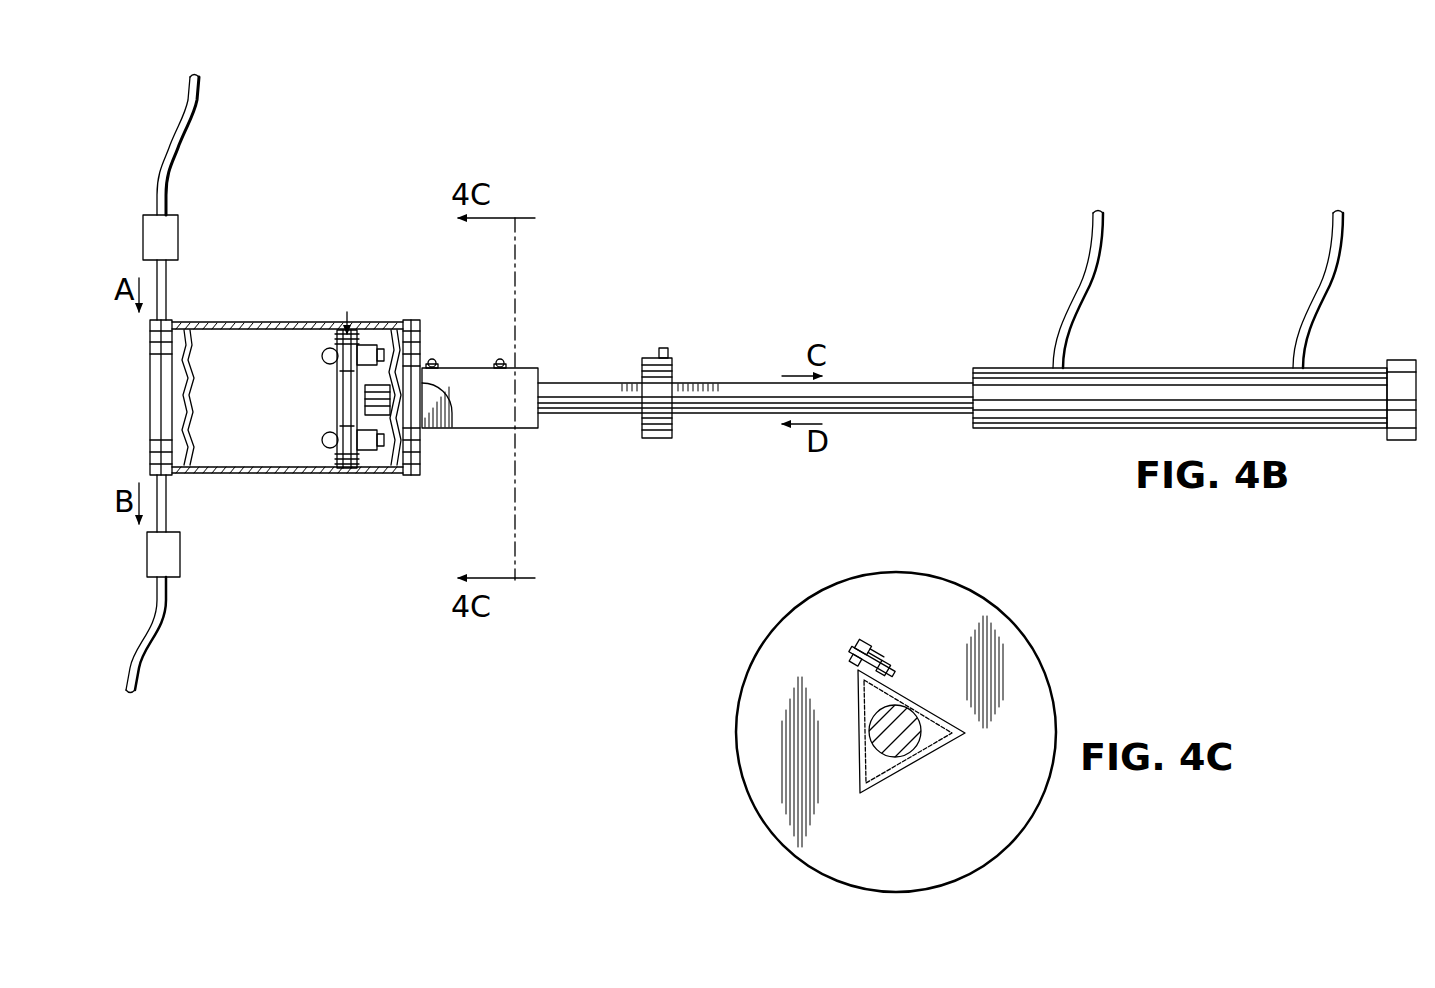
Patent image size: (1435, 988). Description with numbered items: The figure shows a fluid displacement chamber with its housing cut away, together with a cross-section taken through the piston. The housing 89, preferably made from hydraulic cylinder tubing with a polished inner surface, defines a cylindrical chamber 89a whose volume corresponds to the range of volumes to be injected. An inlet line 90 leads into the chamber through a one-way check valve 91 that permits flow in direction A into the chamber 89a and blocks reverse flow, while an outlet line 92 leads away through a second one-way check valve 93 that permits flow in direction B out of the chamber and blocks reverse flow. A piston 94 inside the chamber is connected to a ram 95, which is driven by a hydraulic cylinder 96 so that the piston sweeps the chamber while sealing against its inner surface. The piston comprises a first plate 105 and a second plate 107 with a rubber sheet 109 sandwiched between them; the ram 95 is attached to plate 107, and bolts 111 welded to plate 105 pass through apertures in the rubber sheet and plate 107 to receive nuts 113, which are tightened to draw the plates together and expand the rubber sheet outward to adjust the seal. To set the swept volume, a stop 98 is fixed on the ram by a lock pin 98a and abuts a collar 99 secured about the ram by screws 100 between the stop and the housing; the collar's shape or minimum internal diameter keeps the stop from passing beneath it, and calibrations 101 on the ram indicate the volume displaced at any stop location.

In FIG. 4B, the housing 89 is at (235, 370).
In FIG. 4C, the housing 89 is at (784, 640).
In FIG. 4B, the cylindrical chamber 89a is at (258, 370).
In FIG. 4B, the inlet line 90 is at (166, 292).
In FIG. 4B, the one-way check valve 91 is at (178, 246).
In FIG. 4B, the outlet line 92 is at (166, 508).
In FIG. 4B, the second one-way check valve 93 is at (170, 560).
In FIG. 4B, the piston 94 is at (350, 312).
In FIG. 4B, the ram 95 is at (582, 400).
In FIG. 4C, the ram 95 is at (905, 718).
In FIG. 4B, the hydraulic cylinder 96 is at (998, 378).
In FIG. 4B, the stop 98 is at (648, 358).
In FIG. 4B, the lock pin 98a is at (668, 350).
In FIG. 4B, the collar 99 is at (532, 370).
In FIG. 4C, the collar 99 is at (928, 755).
In FIG. 4B, the screws 100 is at (497, 358).
In FIG. 4C, the screws 100 is at (878, 650).
In FIG. 4B, the calibrations 101 is at (720, 383).
In FIG. 4B, the first plate 105 is at (333, 448).
In FIG. 4B, the second plate 107 is at (372, 452).
In FIG. 4B, the rubber sheet 109 is at (347, 468).
In FIG. 4B, the bolts 111 is at (259, 402).
In FIG. 4B, the nuts 113 is at (370, 400).